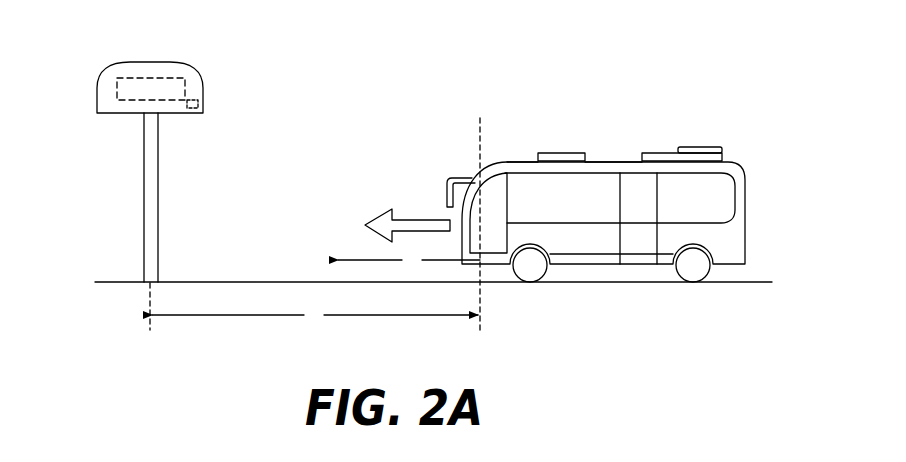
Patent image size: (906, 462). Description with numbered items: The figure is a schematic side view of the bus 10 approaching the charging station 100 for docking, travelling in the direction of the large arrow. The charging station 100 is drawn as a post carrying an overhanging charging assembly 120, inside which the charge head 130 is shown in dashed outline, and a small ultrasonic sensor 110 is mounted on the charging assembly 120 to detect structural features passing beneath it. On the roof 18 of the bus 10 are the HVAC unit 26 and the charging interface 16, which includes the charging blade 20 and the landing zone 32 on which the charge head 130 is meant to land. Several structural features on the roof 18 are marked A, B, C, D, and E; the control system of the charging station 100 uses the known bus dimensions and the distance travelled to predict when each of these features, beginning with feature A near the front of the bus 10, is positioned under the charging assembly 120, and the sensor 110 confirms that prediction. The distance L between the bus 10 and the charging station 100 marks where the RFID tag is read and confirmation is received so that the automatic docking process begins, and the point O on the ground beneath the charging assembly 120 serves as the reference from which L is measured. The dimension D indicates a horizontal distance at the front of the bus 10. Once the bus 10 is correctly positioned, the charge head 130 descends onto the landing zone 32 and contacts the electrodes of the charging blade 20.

The bus 10 is at (750, 240).
The charging interface 16 is at (703, 129).
The roof 18 is at (520, 156).
The charging blade 20 is at (720, 147).
The HVAC unit 26 is at (567, 152).
The landing zone 32 is at (660, 153).
The charging station 100 is at (92, 87).
The ultrasonic sensor 110 is at (209, 109).
The charging assembly 120 is at (197, 73).
The charge head 130 is at (156, 85).
The feature A is at (476, 133).
The feature B is at (534, 157).
The feature C is at (594, 155).
The feature D is at (629, 99).
The feature E is at (678, 148).
The distance L is at (315, 313).
The origin O is at (481, 345).